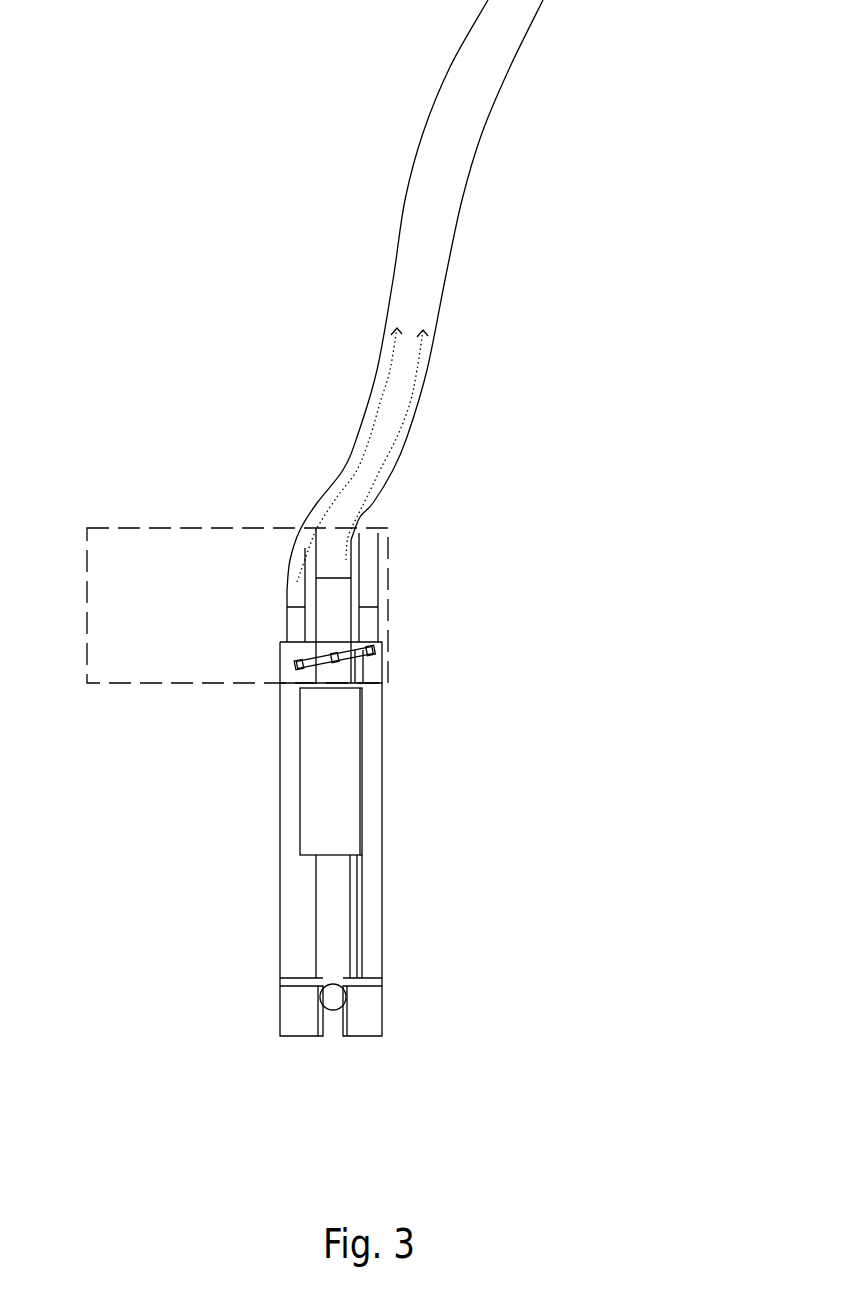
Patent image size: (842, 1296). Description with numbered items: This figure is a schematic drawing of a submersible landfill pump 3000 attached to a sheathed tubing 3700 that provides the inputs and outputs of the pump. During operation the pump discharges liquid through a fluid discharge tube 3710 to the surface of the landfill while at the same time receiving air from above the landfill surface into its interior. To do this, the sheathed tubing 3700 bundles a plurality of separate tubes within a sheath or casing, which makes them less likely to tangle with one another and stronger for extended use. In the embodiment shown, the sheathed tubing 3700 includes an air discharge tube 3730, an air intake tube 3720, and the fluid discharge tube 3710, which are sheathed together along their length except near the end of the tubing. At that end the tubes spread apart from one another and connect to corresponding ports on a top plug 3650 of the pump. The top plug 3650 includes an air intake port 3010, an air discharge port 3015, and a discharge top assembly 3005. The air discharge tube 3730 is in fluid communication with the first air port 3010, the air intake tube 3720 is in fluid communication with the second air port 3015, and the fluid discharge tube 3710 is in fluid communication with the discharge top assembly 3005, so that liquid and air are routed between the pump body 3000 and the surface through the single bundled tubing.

The sheathed tubing 3700 is at (423, 297).
The top plug 3650 is at (262, 527).
The air intake tube 3720 is at (302, 550).
The fluid discharge tube 3710 is at (333, 565).
The discharge top assembly 3005 is at (332, 615).
The air discharge port 3015 is at (295, 632).
The air discharge tube 3730 is at (372, 598).
The air intake port 3010 is at (377, 632).
The handpiece body 3000 is at (448, 811).